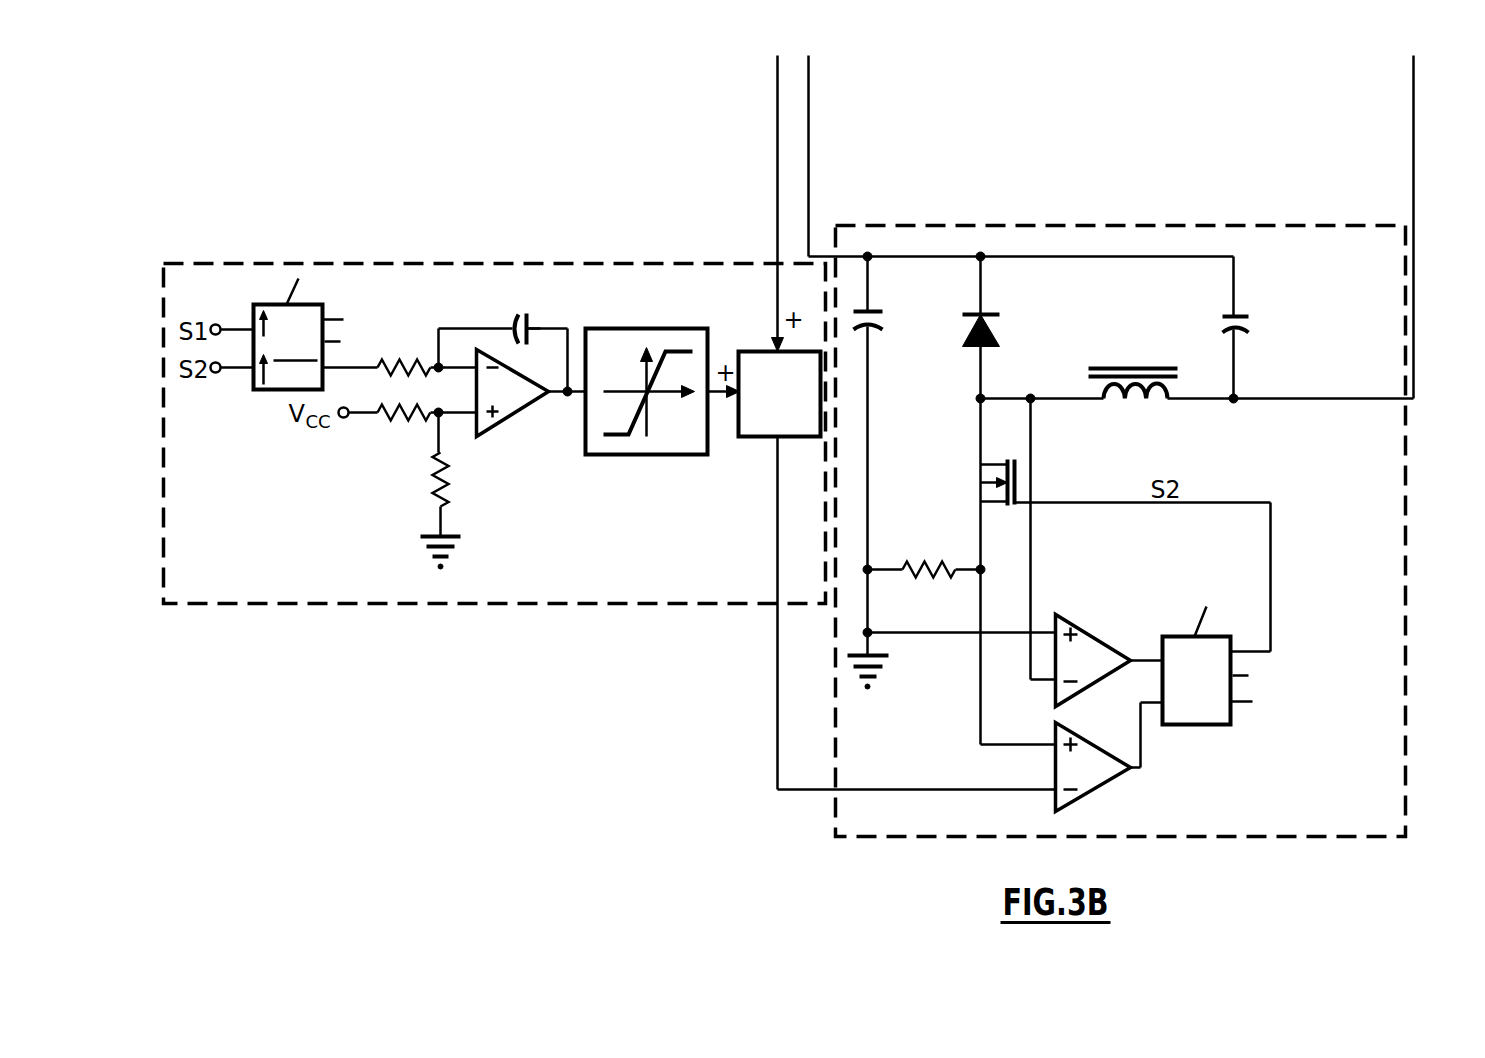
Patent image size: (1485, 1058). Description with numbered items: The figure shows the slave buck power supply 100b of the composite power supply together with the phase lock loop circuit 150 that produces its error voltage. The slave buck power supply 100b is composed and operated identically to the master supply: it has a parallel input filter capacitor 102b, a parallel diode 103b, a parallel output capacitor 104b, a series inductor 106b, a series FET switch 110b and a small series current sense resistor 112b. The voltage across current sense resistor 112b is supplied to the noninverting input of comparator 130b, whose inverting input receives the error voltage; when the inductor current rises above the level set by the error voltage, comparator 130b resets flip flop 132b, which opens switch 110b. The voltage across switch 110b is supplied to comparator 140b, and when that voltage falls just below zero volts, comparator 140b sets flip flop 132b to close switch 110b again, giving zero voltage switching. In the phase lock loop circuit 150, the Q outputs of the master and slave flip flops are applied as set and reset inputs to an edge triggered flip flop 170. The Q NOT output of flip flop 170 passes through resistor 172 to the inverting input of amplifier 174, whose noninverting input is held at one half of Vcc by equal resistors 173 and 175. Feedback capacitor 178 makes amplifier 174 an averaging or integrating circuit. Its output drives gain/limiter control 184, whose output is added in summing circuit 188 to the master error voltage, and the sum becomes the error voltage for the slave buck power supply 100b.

The phase lock loop circuit 150 is at (231, 606).
The edge triggered flip flop 170 is at (290, 333).
The resistor 172 is at (400, 360).
The resistor 173 is at (410, 418).
The amplifier 174 is at (504, 420).
The resistor 175 is at (452, 488).
The feedback capacitor 178 is at (532, 321).
The gain/limiter control 184 is at (660, 329).
The summing circuit 188 is at (760, 439).
The slave buck power supply 100b is at (1408, 666).
The input filter capacitor 102b is at (872, 310).
The diode 103b is at (988, 313).
The output capacitor 104b is at (1241, 333).
The inductor 106b is at (1150, 402).
The FET switch 110b is at (1000, 510).
The current sense resistor 112b is at (950, 560).
The comparator 130b is at (1085, 795).
The flip flop 132b is at (1205, 727).
The comparator 140b is at (1076, 624).